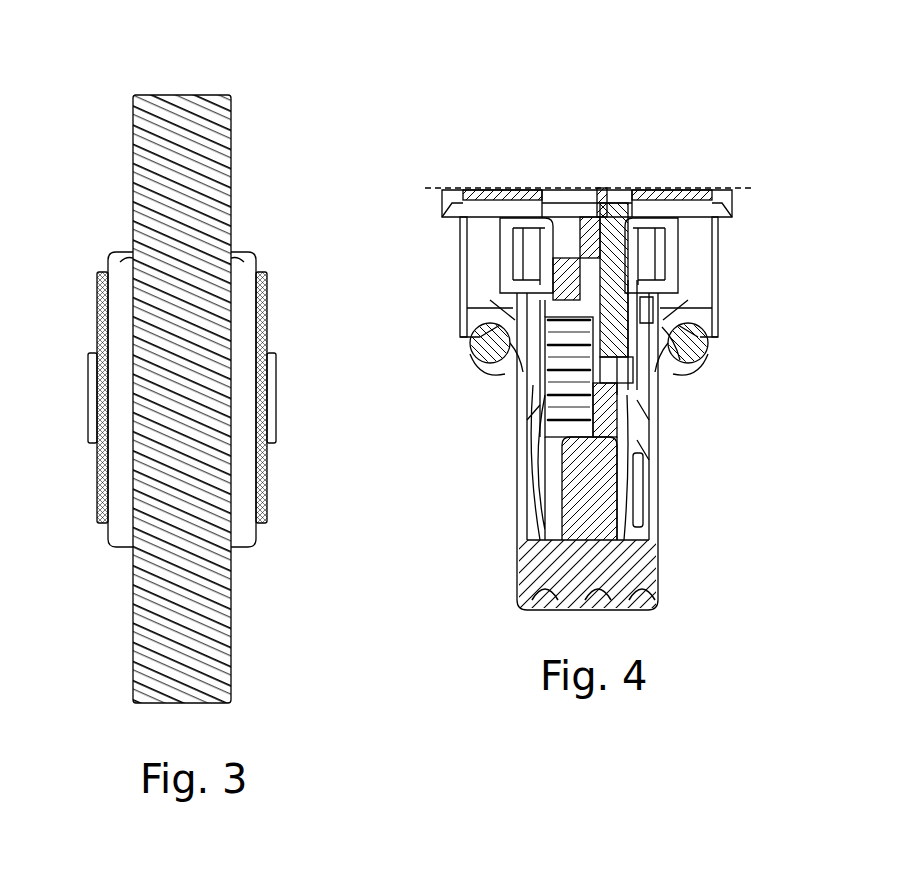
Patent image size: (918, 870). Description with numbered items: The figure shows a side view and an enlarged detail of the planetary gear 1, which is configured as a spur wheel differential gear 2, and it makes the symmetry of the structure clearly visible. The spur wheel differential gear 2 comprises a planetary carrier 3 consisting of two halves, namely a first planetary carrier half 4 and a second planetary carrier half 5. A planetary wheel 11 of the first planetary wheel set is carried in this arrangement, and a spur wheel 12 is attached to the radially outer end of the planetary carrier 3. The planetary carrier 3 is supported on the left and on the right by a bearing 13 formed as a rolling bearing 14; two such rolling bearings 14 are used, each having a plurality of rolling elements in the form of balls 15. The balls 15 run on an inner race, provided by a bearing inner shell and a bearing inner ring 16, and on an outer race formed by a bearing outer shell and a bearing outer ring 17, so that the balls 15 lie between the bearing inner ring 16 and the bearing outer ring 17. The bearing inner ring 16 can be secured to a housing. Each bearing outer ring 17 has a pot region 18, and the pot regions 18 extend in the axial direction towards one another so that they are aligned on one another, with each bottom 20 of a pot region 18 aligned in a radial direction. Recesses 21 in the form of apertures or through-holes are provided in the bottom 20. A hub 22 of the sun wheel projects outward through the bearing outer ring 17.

In FIG. 3, the planetary gear 1 is at (296, 82).
In FIG. 3, the spur wheel differential gear 2 is at (191, 357).
In FIG. 4, the planetary carrier 3 is at (590, 472).
In FIG. 4, the first planetary carrier half 4 is at (547, 523).
In FIG. 4, the second planetary carrier half 5 is at (623, 487).
In FIG. 4, the planetary wheel 11 is at (545, 400).
In FIG. 3, the spur wheel 12 is at (178, 95).
In FIG. 4, the spur wheel 12 is at (620, 562).
In FIG. 4, the bearing 13 is at (462, 353).
In FIG. 4, the rolling bearing 14 is at (712, 362).
In FIG. 3, the balls 15 is at (258, 262).
In FIG. 3, the bearing inner ring 16 is at (98, 317).
In FIG. 3, the bearing outer ring 17 is at (128, 262).
In FIG. 4, the pot region 18 is at (512, 277).
In FIG. 4, the bottom 20 is at (543, 190).
In FIG. 4, the recesses 21 is at (515, 268).
In FIG. 3, the hub 22 is at (92, 400).